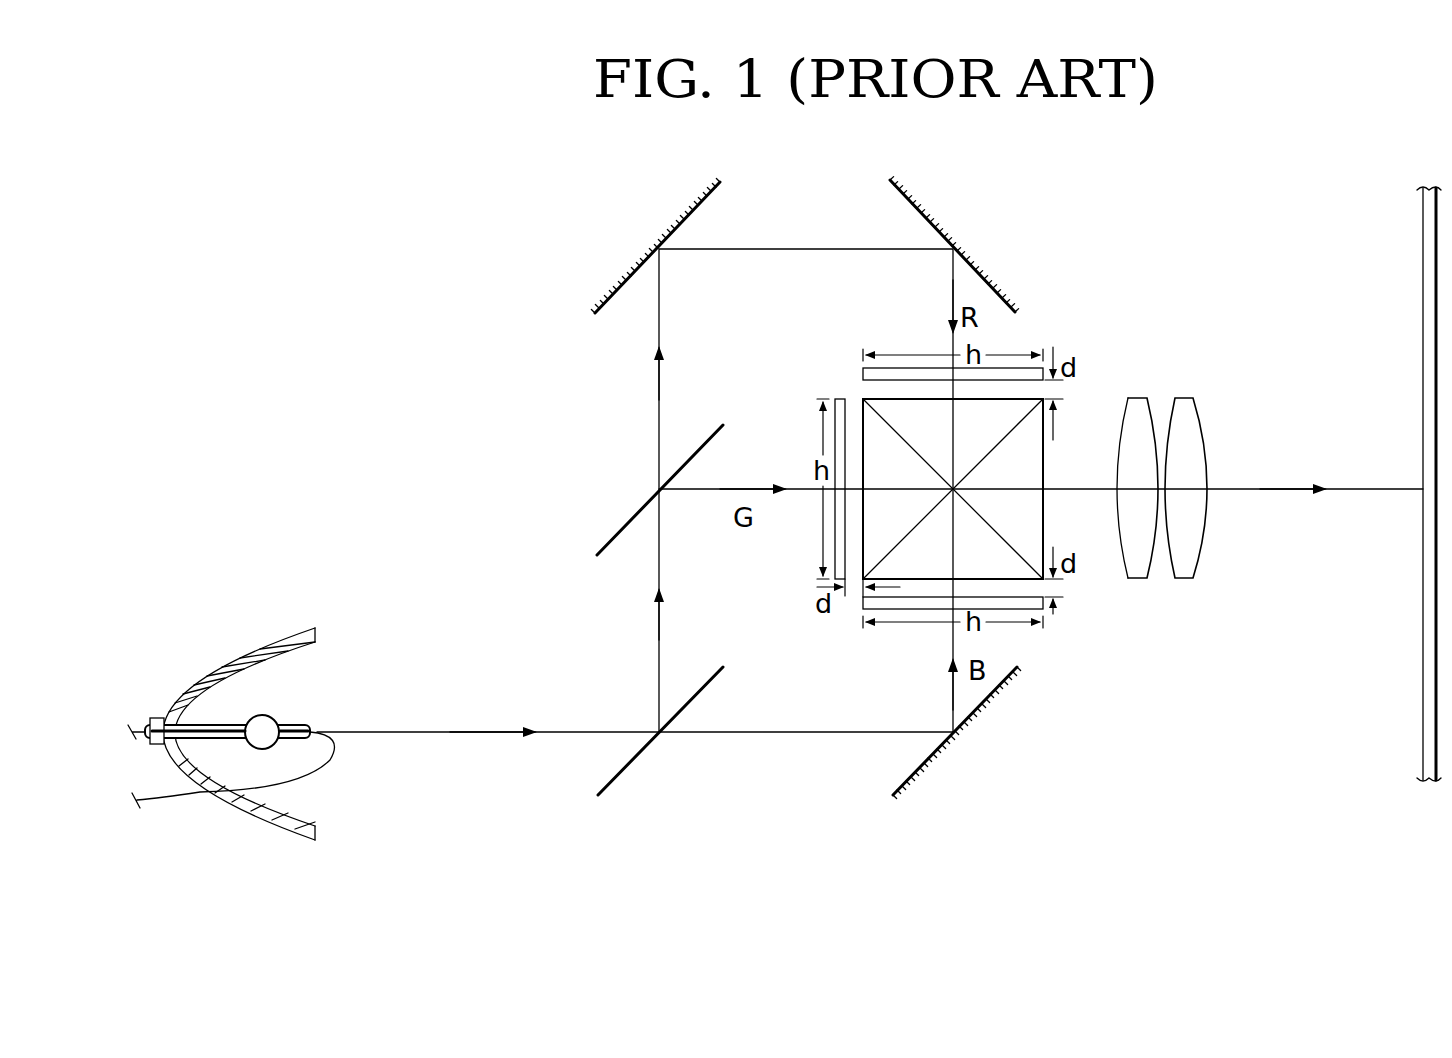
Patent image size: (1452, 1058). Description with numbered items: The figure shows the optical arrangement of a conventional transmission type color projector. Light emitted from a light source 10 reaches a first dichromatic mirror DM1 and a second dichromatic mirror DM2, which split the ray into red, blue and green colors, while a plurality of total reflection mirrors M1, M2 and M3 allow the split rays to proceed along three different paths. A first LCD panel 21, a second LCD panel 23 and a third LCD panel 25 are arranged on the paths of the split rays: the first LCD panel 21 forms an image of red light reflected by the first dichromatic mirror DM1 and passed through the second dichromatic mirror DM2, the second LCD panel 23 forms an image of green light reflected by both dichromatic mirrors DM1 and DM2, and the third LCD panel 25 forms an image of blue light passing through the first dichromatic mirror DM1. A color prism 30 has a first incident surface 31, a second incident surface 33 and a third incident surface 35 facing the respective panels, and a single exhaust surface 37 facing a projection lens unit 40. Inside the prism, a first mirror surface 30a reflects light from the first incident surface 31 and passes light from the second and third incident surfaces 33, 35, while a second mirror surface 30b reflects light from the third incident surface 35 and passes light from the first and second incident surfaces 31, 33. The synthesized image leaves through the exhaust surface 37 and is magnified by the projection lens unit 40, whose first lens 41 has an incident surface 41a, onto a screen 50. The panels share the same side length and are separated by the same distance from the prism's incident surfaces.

The light source 10 is at (236, 622).
The first LCD panel 21 is at (900, 373).
The second LCD panel 23 is at (843, 400).
The third LCD panel 25 is at (866, 607).
The color prism 30 is at (1078, 428).
The first mirror surface 30a is at (977, 513).
The second mirror surface 30b is at (898, 553).
The first incident surface 31 is at (1040, 400).
The second incident surface 33 is at (862, 420).
The third incident surface 35 is at (931, 582).
The exhaust surface 37 is at (1043, 465).
The projection lens unit 40 is at (1172, 602).
The first lens 41 is at (1137, 570).
The incident surface 41a is at (1122, 553).
The screen 50 is at (1423, 747).
The total reflection mirror M1 is at (913, 772).
The total reflection mirror M2 is at (600, 308).
The total reflection mirror M3 is at (898, 195).
The first dichromatic mirror DM1 is at (632, 765).
The second dichromatic mirror DM2 is at (617, 532).